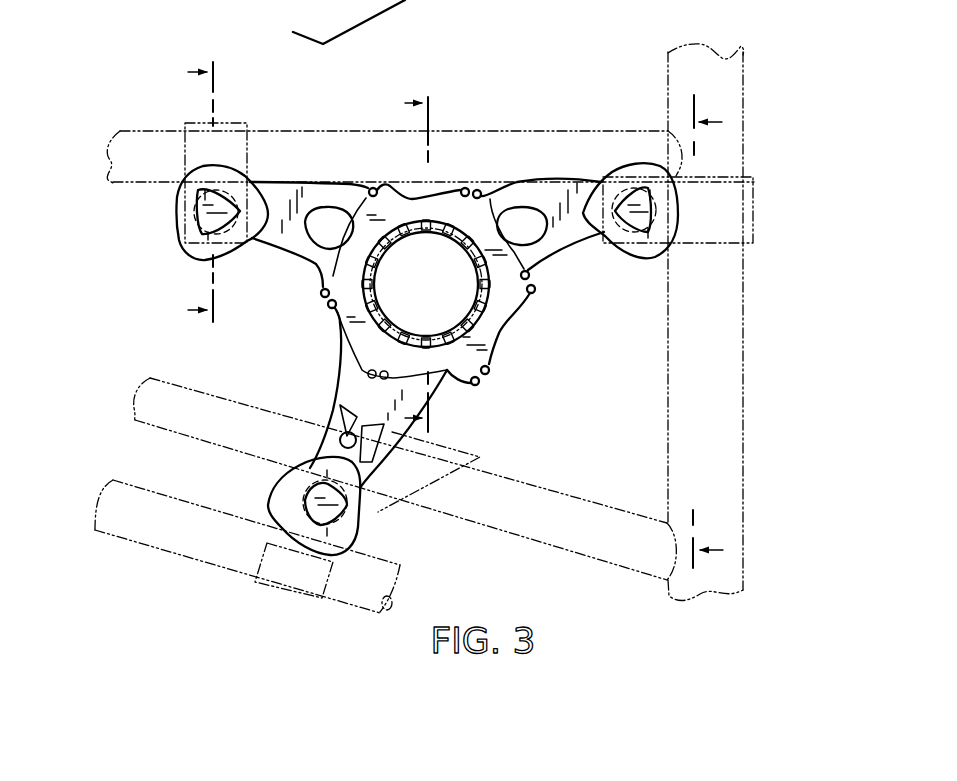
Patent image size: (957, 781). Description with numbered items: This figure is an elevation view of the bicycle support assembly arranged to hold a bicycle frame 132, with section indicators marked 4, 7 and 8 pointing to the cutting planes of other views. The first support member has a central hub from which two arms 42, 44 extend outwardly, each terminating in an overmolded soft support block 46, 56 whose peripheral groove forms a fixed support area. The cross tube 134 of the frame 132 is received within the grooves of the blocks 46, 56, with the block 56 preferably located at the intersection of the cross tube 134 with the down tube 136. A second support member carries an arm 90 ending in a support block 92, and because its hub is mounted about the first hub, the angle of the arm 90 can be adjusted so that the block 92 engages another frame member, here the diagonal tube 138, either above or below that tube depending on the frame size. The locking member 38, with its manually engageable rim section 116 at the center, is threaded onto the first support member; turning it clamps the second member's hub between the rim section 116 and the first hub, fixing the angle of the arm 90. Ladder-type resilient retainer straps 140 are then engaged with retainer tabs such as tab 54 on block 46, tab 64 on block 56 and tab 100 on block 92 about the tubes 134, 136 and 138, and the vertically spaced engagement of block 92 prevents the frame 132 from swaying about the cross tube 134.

The locking member 38 is at (492, 378).
The arm 42 is at (283, 249).
The arm 44 is at (564, 254).
The support block 46 is at (177, 231).
The retainer tab 54 is at (205, 224).
The support block 56 is at (652, 260).
The retainer tab 64 is at (636, 220).
The arm 90 is at (331, 395).
The support block 92 is at (274, 507).
The retainer tab 100 is at (292, 492).
The rim section 116 is at (501, 347).
The frame 132 is at (652, 54).
The cross tube 134 is at (576, 131).
The down tube 136 is at (664, 420).
The diagonal tube 138 is at (558, 489).
The retainer strap 140 is at (181, 126).
The section line 4- 4 is at (708, 336).
The section line 7- 7 is at (208, 192).
The section line 8- 8 is at (425, 262).